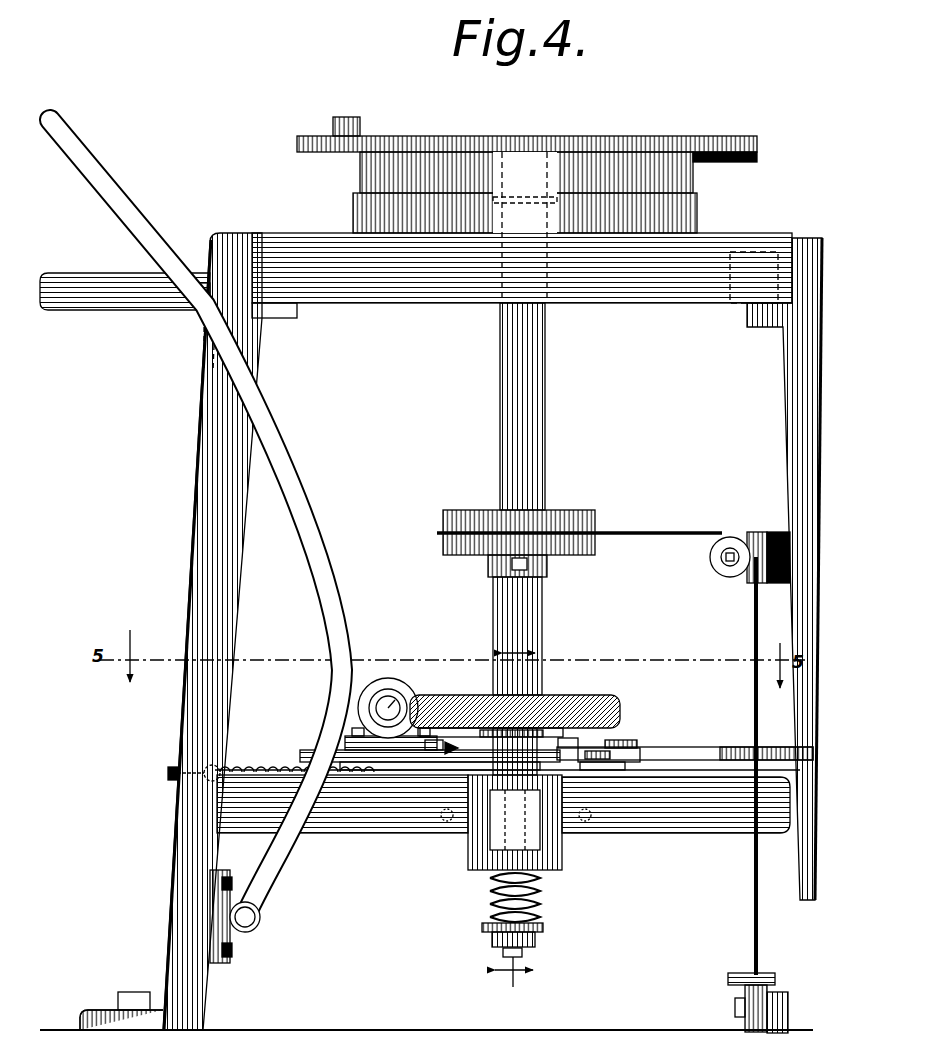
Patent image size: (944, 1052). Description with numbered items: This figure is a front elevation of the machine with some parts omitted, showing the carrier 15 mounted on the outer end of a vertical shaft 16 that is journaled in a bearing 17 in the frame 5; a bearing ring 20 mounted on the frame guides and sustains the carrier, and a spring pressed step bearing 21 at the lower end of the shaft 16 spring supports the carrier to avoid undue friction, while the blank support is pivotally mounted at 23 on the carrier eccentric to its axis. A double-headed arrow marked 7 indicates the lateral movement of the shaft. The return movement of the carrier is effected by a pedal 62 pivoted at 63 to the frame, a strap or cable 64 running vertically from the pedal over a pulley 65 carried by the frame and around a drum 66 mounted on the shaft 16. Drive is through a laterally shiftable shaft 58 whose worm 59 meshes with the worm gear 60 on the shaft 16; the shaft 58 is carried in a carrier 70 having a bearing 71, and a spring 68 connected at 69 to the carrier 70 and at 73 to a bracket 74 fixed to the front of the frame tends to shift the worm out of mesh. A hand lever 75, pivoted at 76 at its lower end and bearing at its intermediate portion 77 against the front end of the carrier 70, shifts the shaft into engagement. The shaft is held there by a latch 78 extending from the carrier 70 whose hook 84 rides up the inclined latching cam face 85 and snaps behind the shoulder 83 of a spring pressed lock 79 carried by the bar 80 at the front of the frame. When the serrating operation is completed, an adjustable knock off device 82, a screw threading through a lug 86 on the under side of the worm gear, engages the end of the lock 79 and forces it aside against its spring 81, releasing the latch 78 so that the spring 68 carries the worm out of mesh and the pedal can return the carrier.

The frame 5 is at (522, 275).
The direction arrow 7 is at (515, 816).
The carrier 15 is at (520, 148).
The vertical shaft 16 is at (519, 539).
The bearing 17 is at (583, 822).
The bearing ring 20 is at (353, 207).
The spring pressed step bearing 21 is at (543, 892).
The pivot 23 is at (360, 126).
The shaft 58 is at (410, 690).
The worm 59 is at (380, 690).
The worm gear 60 is at (575, 695).
The pedal 62 is at (770, 975).
The pivot 63 is at (735, 1012).
The strap or cable 64 is at (655, 538).
The pulley 65 is at (718, 568).
The drum 66 is at (572, 557).
The spring 68 is at (260, 764).
The spring connection 69 is at (507, 801).
The carrier 70 is at (365, 775).
The bearing 71 is at (358, 708).
The spring connection 73 is at (212, 765).
The bracket 74 is at (168, 768).
The hand lever 75 is at (352, 612).
The pivot 76 is at (260, 917).
The bearing portion 77 is at (340, 757).
The latch 78 is at (515, 822).
The spring pressed lock 79 is at (600, 746).
The bar 80 is at (676, 805).
The spring 81 is at (695, 752).
The knock off device 82 is at (455, 752).
The shoulder 83 is at (600, 770).
The hook 84 is at (637, 743).
The inclined latching cam face 85 is at (563, 748).
The lug 86 is at (432, 750).